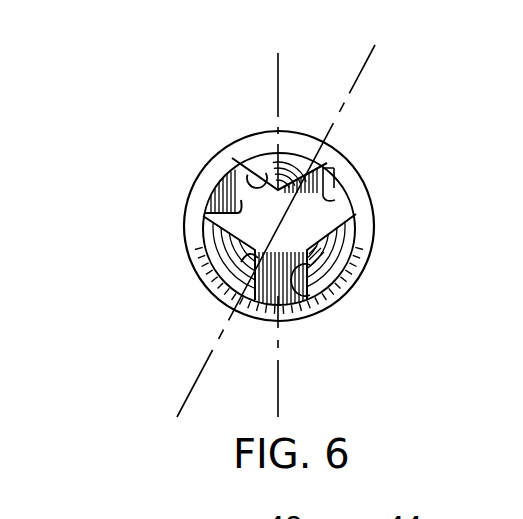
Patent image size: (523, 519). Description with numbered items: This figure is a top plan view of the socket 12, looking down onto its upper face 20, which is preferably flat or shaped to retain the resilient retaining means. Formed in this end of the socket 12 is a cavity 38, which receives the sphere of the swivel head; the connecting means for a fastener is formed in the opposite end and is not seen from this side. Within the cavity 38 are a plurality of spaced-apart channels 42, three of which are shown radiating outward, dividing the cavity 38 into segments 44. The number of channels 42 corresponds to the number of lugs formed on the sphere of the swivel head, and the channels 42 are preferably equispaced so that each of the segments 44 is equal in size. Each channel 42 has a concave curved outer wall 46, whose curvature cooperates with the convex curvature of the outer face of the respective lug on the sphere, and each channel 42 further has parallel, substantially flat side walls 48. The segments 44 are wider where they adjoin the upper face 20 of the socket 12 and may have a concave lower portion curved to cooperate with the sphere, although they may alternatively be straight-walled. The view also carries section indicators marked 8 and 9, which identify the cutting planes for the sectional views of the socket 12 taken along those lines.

The socket 12 is at (167, 243).
The upper face 20 is at (366, 228).
The concave curved outer wall 46 is at (350, 188).
The channels 42 is at (216, 212).
The cavity 38 is at (257, 167).
The segments 44 is at (323, 255).
The side walls 48 is at (236, 166).
The section line 8- 8 is at (277, 67).
The section line 9- 9 is at (362, 73).